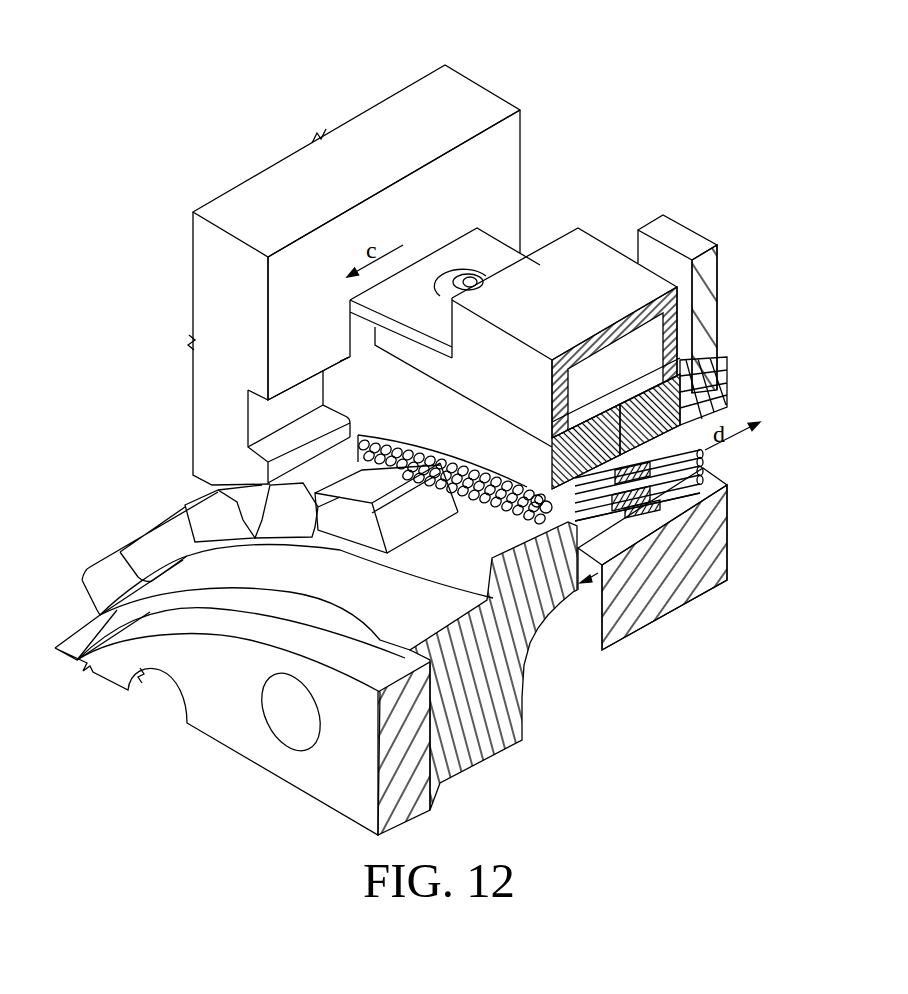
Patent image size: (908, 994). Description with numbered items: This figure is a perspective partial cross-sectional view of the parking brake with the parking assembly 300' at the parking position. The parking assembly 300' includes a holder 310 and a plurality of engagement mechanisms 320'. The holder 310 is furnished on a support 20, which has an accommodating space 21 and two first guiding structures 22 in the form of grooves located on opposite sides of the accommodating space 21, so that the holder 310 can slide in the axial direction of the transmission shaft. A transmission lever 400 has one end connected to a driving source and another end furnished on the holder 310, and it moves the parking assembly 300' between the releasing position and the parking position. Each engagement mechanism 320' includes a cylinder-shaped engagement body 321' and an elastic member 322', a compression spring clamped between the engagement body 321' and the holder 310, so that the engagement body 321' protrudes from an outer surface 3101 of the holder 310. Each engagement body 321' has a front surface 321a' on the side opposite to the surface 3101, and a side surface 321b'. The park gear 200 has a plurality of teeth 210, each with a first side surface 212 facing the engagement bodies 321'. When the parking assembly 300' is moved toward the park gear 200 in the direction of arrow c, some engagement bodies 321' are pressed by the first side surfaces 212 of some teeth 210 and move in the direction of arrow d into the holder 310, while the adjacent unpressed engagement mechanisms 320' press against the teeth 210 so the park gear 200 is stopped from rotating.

The support 20 is at (487, 117).
The accommodating space 21 is at (284, 299).
The first guiding structure 22 is at (268, 416).
The parking assembly 300' is at (508, 309).
The transmission lever 400 is at (717, 280).
The surface 3101 is at (668, 415).
The holder 310 is at (672, 428).
The side surface 321b' is at (601, 430).
The front surface 321a' is at (454, 480).
The elastic member 322' is at (705, 527).
The engagement body 321' is at (671, 553).
The engagement mechanism 320' is at (709, 574).
The first side surface 212 is at (602, 570).
The tooth 210 is at (537, 570).
The park gear 200 is at (536, 726).